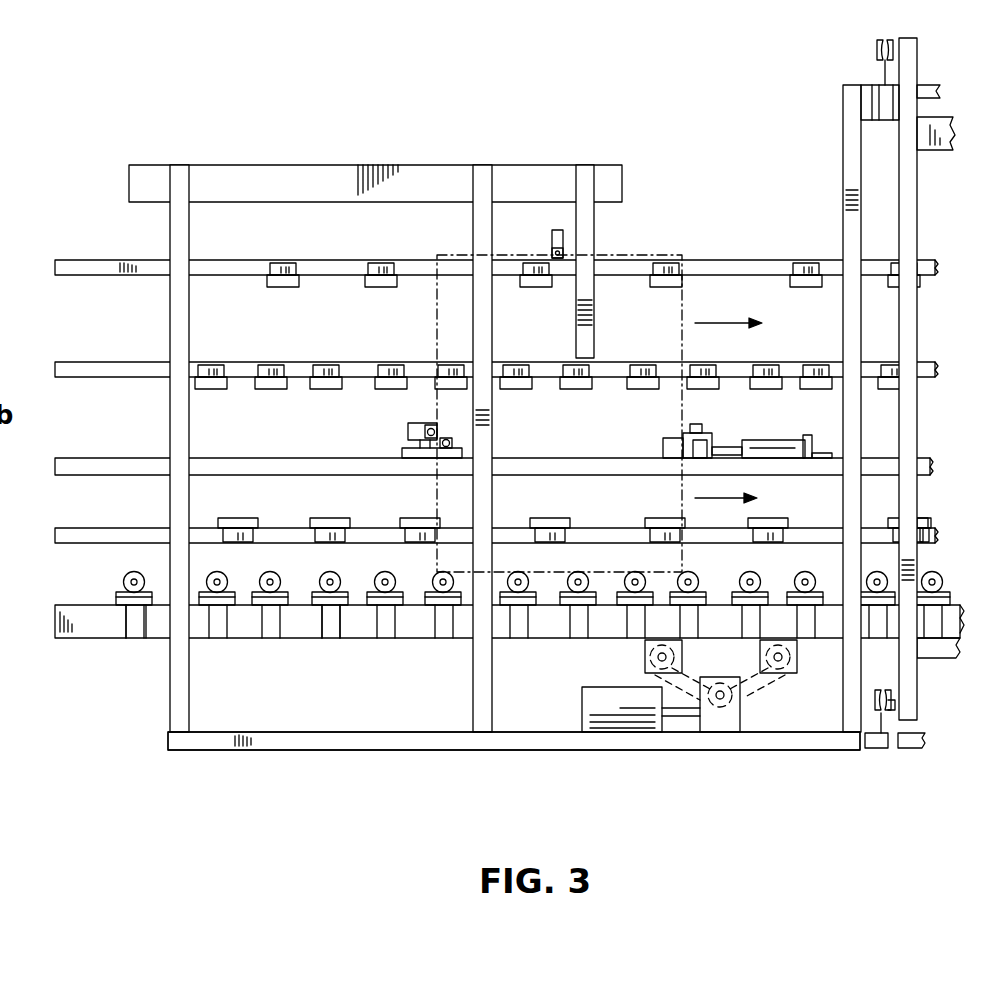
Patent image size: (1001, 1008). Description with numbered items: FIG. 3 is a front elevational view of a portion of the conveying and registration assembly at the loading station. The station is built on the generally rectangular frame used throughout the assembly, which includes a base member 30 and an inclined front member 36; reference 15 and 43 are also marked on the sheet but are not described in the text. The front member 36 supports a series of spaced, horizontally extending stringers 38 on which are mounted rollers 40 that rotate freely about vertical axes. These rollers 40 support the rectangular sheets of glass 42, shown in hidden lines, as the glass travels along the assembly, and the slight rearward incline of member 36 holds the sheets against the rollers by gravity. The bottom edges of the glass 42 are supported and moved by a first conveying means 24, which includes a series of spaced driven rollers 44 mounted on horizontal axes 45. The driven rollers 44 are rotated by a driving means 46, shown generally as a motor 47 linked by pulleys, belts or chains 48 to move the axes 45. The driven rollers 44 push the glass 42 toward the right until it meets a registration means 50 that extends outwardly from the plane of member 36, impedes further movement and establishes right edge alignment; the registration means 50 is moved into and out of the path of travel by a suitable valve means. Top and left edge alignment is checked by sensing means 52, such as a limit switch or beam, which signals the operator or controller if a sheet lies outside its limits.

The conveyor apparatus 15 is at (552, 760).
The first conveying means 24 is at (90, 595).
The base member 30 is at (312, 742).
The inclined front member 36 is at (182, 187).
The stringers 38 is at (88, 265).
The rollers 40 is at (276, 278).
The rectangular sheets of glass 42 is at (650, 327).
The leg 43 is at (145, 640).
The driven rollers 44 is at (262, 606).
The horizontal axes 45 is at (333, 606).
The driving means 46 is at (722, 735).
The motor 47 is at (590, 703).
The pulleys, belts or chains 48 is at (752, 690).
The registration means 50 is at (700, 433).
The sensing means 52 is at (560, 249).